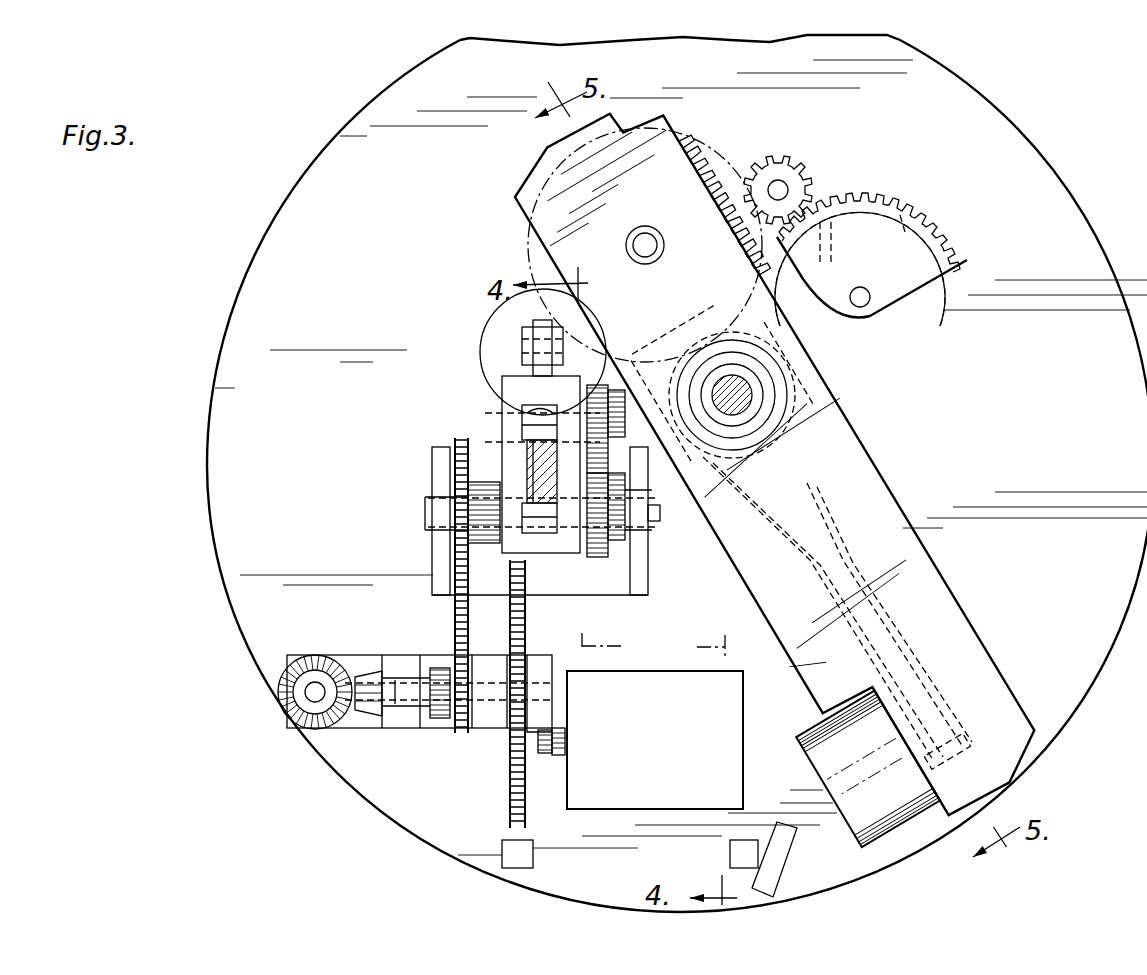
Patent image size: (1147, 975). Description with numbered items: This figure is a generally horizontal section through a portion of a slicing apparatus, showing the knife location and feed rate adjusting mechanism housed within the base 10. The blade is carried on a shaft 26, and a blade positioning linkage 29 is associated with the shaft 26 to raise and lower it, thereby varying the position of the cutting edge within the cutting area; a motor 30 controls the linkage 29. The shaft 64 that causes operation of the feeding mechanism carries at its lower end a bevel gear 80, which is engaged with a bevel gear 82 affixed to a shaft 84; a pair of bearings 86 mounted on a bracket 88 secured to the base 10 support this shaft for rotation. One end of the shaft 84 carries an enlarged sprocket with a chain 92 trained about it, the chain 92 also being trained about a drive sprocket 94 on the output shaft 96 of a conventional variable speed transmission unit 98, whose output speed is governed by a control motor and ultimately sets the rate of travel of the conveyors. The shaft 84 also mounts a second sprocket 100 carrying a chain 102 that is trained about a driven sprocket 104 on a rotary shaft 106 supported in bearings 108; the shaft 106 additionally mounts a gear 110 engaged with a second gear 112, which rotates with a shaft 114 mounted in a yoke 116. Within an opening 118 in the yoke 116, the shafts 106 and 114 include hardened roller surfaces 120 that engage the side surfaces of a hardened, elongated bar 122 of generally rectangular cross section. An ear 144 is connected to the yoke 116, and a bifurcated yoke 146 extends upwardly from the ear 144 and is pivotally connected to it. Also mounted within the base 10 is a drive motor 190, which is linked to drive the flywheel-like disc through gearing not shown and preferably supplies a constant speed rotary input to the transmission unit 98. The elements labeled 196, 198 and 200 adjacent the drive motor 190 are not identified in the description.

The base 10 is at (393, 824).
The shaft 26 is at (753, 403).
The blade positioning linkage 29 is at (763, 475).
The motor 30 is at (868, 769).
The shaft 64 is at (305, 690).
The bevel gear 80 is at (280, 705).
The bevel gear 82 is at (365, 672).
The shaft 84 is at (420, 710).
The bearings 86 is at (398, 660).
The bracket 88 is at (352, 720).
The chain 92 is at (525, 637).
The drive sprocket 94 is at (533, 763).
The output shaft 96 is at (557, 740).
The variable speed transmission unit 98 is at (655, 740).
The second sprocket 100 is at (443, 710).
The chain 102 is at (455, 612).
The driven sprocket 104 is at (473, 512).
The rotary shaft 106 is at (647, 512).
The bearings 108 is at (432, 470).
The gear 110 is at (597, 557).
The second gear 112 is at (597, 380).
The shaft 114 is at (497, 417).
The yoke 116 is at (540, 553).
The opening 118 is at (560, 404).
The hardened roller surfaces 120 is at (523, 407).
The elongated bar 122 is at (527, 470).
The ear 144 is at (533, 318).
The bifurcated yoke 146 is at (522, 345).
The drive motor 190 is at (928, 327).
The sector gear 196 is at (798, 325).
The rack 198 is at (720, 160).
The pivot hub 200 is at (645, 243).